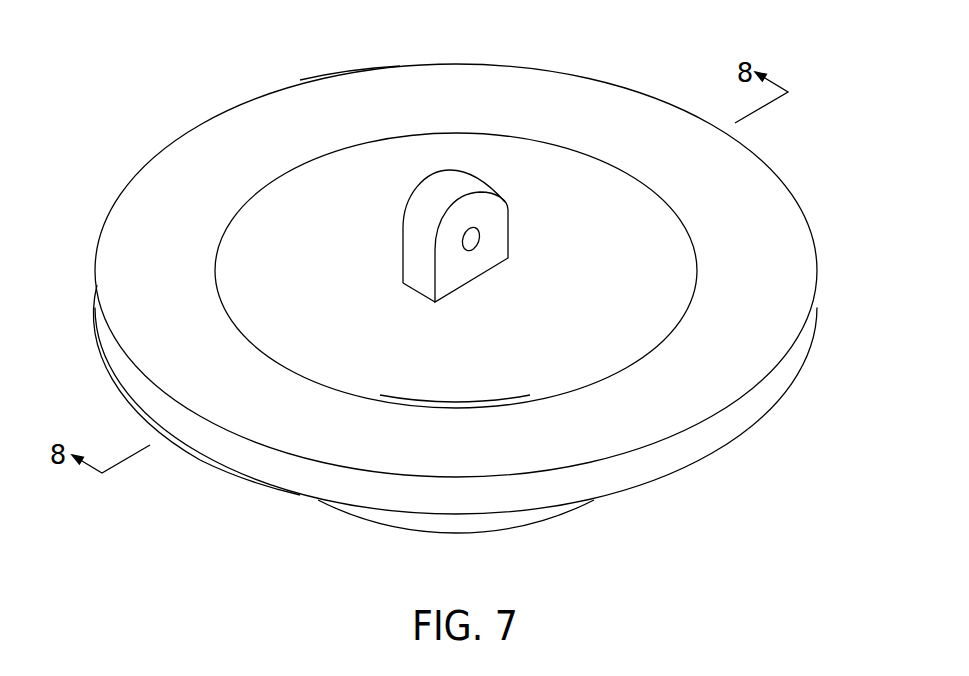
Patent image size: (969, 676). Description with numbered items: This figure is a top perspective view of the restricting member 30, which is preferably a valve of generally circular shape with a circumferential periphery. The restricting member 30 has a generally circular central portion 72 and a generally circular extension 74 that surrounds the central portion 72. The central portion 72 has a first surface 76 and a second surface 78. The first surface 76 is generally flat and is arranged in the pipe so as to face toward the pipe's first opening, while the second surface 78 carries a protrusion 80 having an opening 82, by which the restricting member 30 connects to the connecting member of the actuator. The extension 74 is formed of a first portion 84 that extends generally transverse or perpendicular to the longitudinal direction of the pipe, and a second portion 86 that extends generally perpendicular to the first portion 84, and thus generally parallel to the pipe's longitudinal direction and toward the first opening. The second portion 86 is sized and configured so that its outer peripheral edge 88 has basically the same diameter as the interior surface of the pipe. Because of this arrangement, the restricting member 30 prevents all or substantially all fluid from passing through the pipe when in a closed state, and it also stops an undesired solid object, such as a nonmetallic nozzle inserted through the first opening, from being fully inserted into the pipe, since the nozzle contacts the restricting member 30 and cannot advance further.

The restricting member 30 is at (612, 80).
The central portion 72 is at (337, 182).
The extension 74 is at (232, 150).
The first surface 76 is at (512, 525).
The second surface 78 is at (580, 321).
The protrusion 80 is at (479, 242).
The opening 82 is at (497, 193).
The first portion 84 is at (153, 315).
The second portion 86 is at (263, 463).
The outer peripheral edge 88 is at (817, 297).